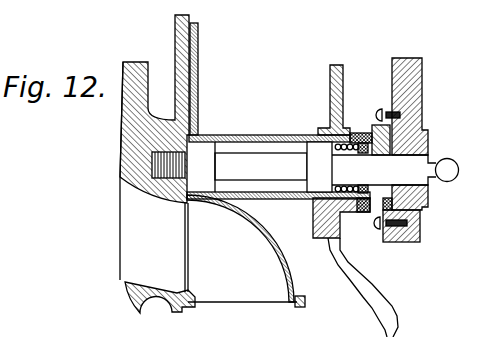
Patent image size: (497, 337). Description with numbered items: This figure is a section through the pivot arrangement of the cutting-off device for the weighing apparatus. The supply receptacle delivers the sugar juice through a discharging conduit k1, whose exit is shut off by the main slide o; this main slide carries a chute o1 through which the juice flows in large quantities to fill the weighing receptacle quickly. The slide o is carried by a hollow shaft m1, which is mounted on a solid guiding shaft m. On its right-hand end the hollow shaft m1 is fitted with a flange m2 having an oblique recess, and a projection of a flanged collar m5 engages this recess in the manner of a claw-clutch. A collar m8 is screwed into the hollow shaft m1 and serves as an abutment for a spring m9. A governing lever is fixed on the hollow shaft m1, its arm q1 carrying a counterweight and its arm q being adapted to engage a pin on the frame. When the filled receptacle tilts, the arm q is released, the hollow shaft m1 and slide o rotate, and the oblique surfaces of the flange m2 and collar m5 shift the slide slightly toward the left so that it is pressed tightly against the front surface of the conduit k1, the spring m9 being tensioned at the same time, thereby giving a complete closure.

The discharging conduit k1 is at (127, 147).
The main slide o is at (213, 91).
The chute o1 is at (280, 252).
The hollow shaft m1 is at (251, 136).
The solid guiding shaft m is at (273, 167).
The counterweighted arm of governing lever q1 is at (331, 77).
The flange m2 is at (362, 128).
The collar m8 is at (397, 148).
The flanged collar m5 is at (421, 210).
The spring m9 is at (325, 190).
The arm of governing lever q is at (380, 303).